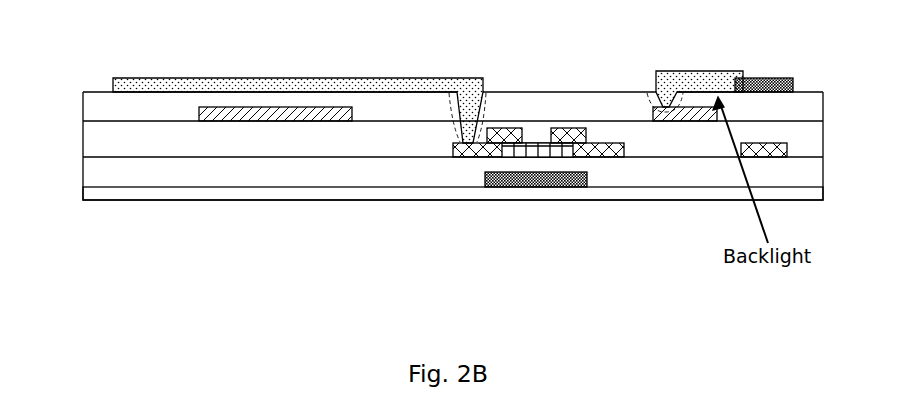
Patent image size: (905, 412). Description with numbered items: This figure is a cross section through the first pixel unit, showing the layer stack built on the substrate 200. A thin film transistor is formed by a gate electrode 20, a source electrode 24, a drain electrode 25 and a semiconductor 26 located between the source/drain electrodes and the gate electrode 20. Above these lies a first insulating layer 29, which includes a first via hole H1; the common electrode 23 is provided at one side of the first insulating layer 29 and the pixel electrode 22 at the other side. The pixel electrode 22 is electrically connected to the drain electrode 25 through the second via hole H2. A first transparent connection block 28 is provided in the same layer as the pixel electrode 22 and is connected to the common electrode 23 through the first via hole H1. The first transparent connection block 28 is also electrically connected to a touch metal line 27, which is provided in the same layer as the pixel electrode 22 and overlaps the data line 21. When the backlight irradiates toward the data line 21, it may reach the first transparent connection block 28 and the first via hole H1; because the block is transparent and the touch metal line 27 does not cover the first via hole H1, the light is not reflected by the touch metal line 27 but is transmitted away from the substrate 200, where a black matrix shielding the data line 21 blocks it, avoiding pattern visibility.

The gate electrode 20 is at (501, 185).
The data line 21 is at (782, 153).
The pixel electrode 22 is at (133, 85).
The common electrode 23 is at (210, 110).
The source electrode 24 is at (610, 152).
The drain electrode 25 is at (473, 152).
The semiconductor 26 is at (545, 150).
The touch metal line 27 is at (790, 81).
The first transparent connection block 28 is at (698, 77).
The first insulating layer 29 is at (783, 116).
The base substrate 200 is at (120, 193).
The first via hole H1 is at (655, 95).
The second via hole H2 is at (452, 113).